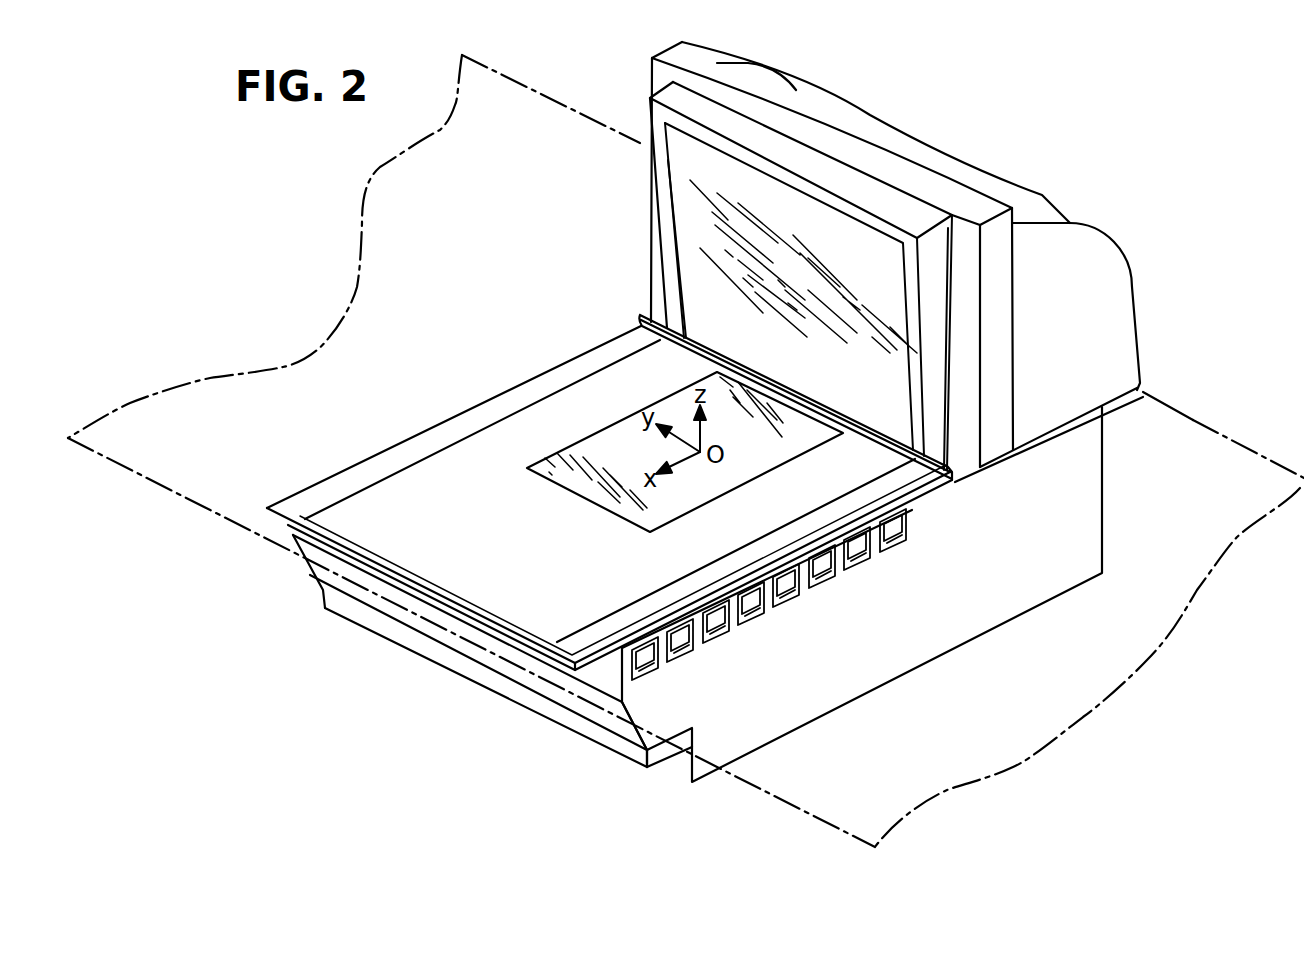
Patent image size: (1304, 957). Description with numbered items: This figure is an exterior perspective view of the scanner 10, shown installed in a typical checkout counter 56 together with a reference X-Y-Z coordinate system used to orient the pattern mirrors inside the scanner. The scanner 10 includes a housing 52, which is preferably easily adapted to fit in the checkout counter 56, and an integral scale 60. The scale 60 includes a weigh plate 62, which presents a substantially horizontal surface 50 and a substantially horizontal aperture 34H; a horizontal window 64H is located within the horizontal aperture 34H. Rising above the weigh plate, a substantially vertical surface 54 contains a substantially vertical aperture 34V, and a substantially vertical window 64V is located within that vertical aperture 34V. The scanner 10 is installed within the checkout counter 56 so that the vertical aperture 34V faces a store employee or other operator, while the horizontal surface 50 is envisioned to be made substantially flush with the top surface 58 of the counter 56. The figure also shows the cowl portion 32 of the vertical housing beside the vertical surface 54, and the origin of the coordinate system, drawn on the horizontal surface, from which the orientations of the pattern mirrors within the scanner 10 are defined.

The scanner 10 is at (905, 124).
The vertical housing cowl 32 is at (1137, 299).
The substantially vertical aperture 34V is at (920, 305).
The substantially vertical surface 54 is at (918, 340).
The substantially vertical window 64V is at (763, 192).
The substantially horizontal surface 50 is at (910, 497).
The substantially horizontal aperture 34H is at (588, 505).
The horizontal window 64H is at (588, 442).
The housing 52 is at (947, 635).
The integral scale 60 is at (432, 574).
The weigh plate 62 is at (551, 630).
The checkout counter 56 is at (1223, 441).
The top surface 58 is at (1148, 620).